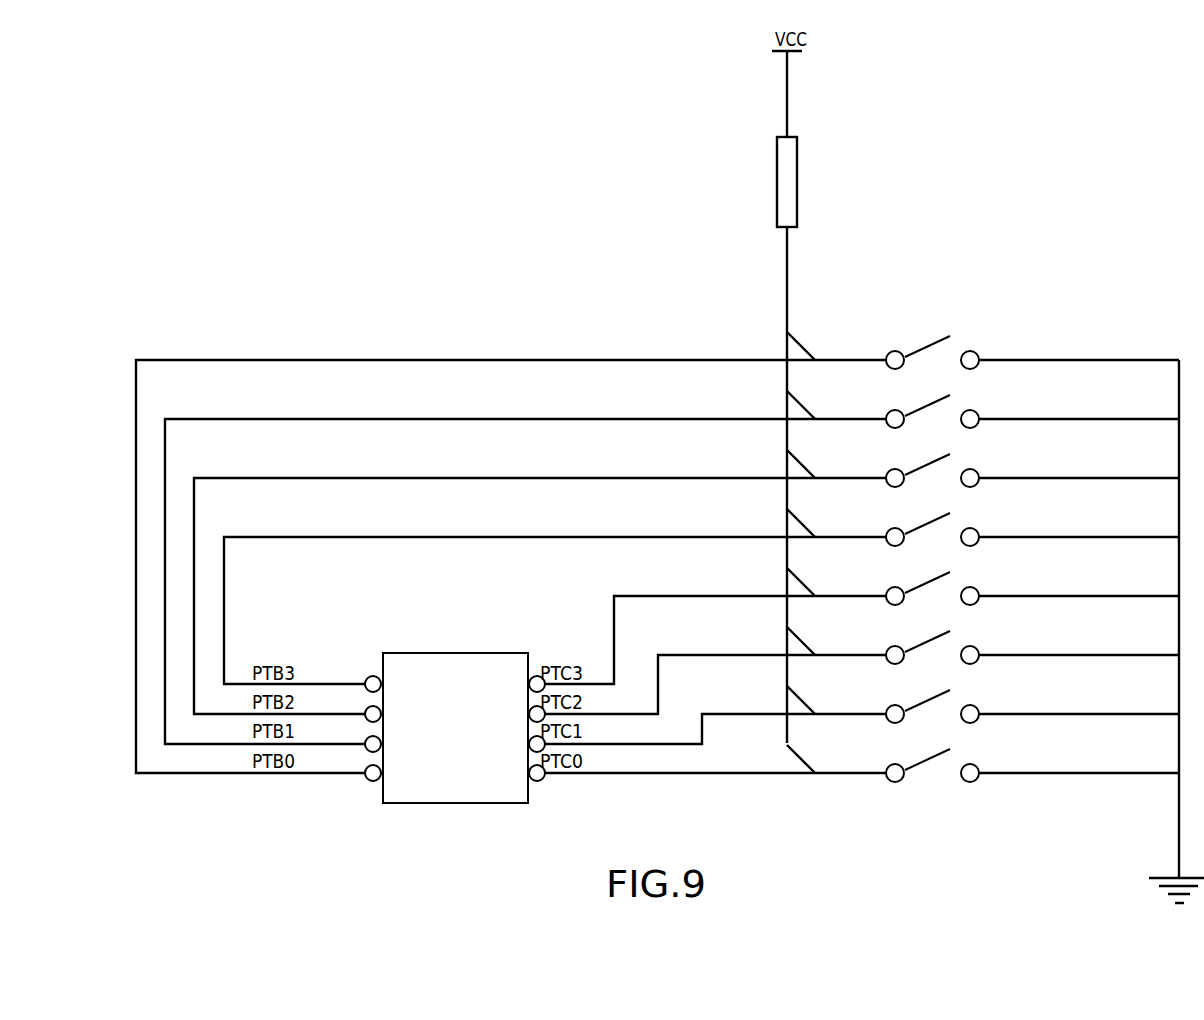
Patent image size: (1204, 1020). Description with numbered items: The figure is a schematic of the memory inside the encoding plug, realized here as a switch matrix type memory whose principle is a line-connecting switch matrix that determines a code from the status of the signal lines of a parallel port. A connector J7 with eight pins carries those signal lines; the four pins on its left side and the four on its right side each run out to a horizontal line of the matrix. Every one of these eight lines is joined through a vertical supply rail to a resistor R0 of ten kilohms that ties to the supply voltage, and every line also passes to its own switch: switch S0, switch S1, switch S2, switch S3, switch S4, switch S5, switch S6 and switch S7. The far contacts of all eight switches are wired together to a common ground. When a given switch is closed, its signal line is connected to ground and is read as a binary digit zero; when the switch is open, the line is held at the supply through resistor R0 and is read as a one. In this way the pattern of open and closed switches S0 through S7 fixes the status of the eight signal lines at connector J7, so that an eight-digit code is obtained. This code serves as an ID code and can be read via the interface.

The resistor R0 is at (801, 182).
The connector J7 is at (455, 717).
The switch S0 is at (932, 340).
The switch S1 is at (932, 400).
The switch S2 is at (932, 459).
The switch S3 is at (932, 518).
The switch S4 is at (932, 577).
The switch S5 is at (932, 631).
The switch S6 is at (932, 691).
The switch S7 is at (932, 749).